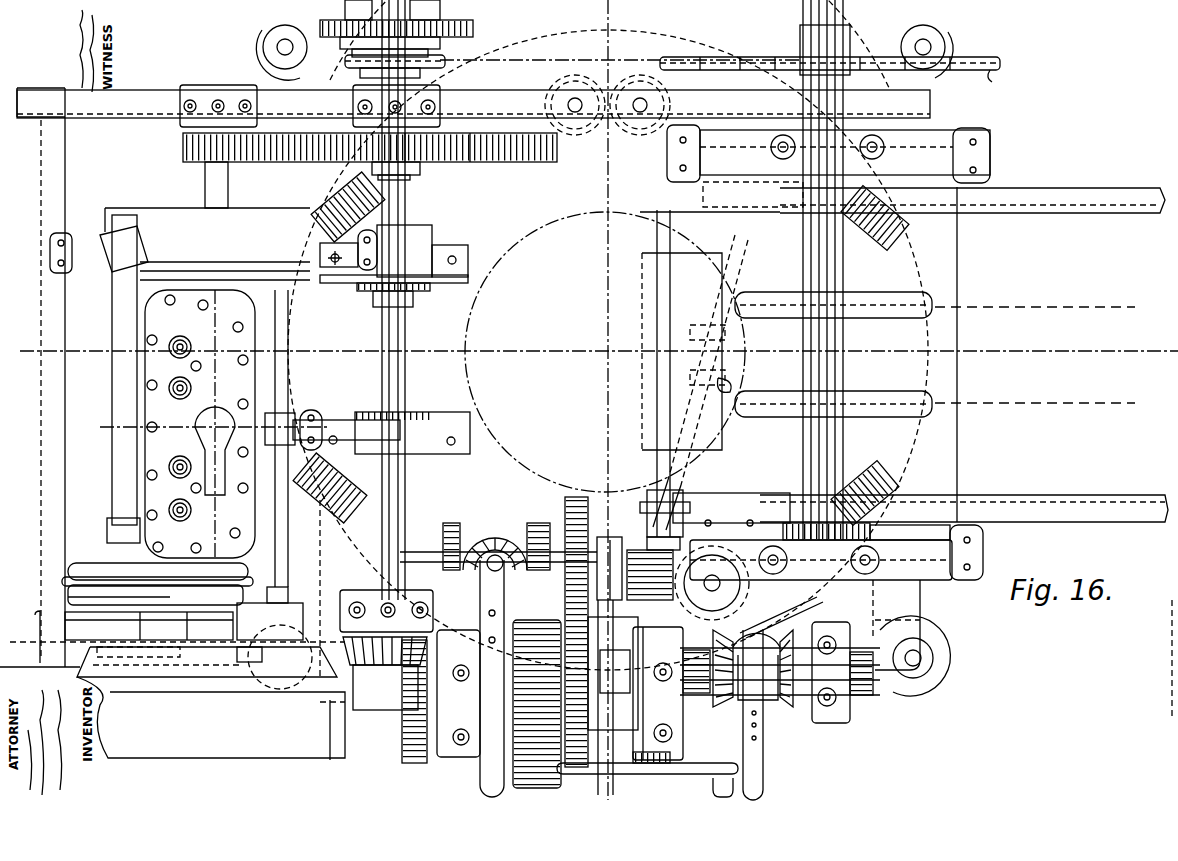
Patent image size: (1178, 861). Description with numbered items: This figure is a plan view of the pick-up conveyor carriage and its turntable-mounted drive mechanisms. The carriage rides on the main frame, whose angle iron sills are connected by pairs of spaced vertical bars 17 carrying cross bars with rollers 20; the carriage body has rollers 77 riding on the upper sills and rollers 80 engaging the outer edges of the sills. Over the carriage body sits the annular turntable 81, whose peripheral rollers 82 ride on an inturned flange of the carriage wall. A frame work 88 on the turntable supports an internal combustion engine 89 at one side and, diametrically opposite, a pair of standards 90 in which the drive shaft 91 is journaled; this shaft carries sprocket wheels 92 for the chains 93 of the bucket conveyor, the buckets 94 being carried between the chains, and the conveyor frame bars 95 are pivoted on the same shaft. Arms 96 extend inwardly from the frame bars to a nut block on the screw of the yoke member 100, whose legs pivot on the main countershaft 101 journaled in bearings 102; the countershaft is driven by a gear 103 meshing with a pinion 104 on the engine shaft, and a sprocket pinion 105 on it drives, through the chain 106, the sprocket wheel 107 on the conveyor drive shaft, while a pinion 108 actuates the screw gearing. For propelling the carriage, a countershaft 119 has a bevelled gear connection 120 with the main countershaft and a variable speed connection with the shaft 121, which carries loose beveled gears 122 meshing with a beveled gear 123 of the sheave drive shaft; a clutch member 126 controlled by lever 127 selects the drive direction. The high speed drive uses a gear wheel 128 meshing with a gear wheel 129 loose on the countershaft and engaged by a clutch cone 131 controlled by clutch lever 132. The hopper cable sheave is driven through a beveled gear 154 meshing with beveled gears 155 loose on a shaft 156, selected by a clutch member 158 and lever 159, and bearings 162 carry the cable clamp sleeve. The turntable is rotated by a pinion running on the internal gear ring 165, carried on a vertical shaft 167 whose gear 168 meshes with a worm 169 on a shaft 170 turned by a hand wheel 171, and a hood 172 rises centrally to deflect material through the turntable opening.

The vertical bars 17 is at (685, 475).
The rollers 20 is at (712, 231).
The rollers 77 is at (348, 745).
The rollers 80 is at (262, 40).
The turntable 81 is at (434, 300).
The rollers 82 is at (400, 192).
The frame work 88 is at (150, 95).
The internal combustion engine 89 is at (205, 325).
The standards 90 is at (915, 142).
The drive shaft 91 is at (810, 330).
The sprocket wheels 92 is at (860, 400).
The chains 93 is at (1080, 312).
The buckets 94 is at (682, 351).
The conveyor frame bars 95 is at (1075, 200).
The arms 96 is at (715, 192).
The yoke member 100 is at (430, 295).
The drive shaft 101 is at (370, 320).
The bearings 102 is at (407, 252).
The gear 103 is at (490, 178).
The pinion 104 is at (183, 160).
The sprocket pinion 105 is at (455, 58).
The chain 106 is at (700, 58).
The sprocket wheel 107 is at (992, 78).
The pinion 108 is at (430, 500).
The countershaft 119 is at (415, 763).
The bevelled gear connection 120 is at (365, 690).
The shaft 121 is at (443, 540).
The beveled gears 122 is at (540, 533).
The beveled gear 123 is at (475, 535).
The clutch member 126 is at (510, 530).
The lever 127 is at (465, 757).
The gear wheel 128 is at (578, 497).
The gear wheel 129 is at (623, 709).
The clutch cone 131 is at (537, 704).
The clutch lever 132 is at (482, 785).
The beveled gear 154 is at (810, 630).
The beveled gears 155 is at (870, 625).
The shaft 156 is at (868, 707).
The clutch member 158 is at (775, 708).
The lever 159 is at (765, 768).
The bearings 162 is at (740, 380).
The internal gear ring 165 is at (640, 455).
The vertical shaft 167 is at (745, 605).
The gear 168 is at (740, 618).
The worm 169 is at (712, 583).
The shaft 170 is at (690, 710).
The hand wheel 171 is at (650, 780).
The hood 172 is at (628, 240).